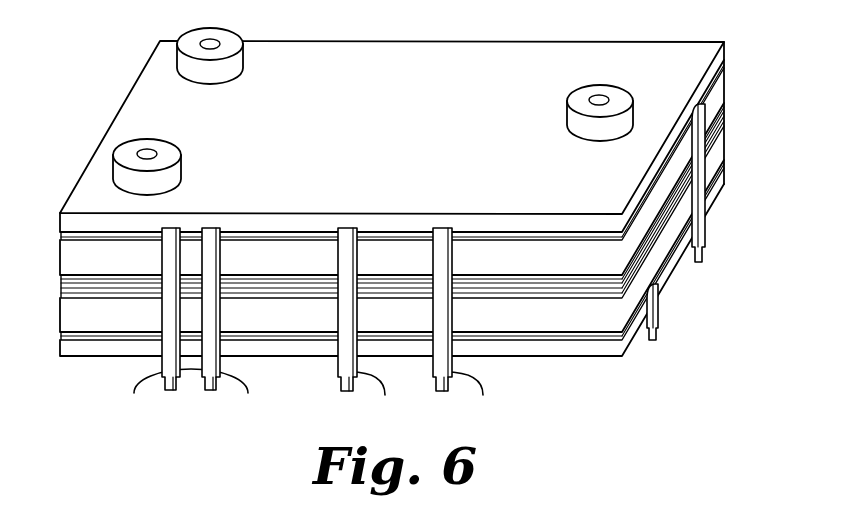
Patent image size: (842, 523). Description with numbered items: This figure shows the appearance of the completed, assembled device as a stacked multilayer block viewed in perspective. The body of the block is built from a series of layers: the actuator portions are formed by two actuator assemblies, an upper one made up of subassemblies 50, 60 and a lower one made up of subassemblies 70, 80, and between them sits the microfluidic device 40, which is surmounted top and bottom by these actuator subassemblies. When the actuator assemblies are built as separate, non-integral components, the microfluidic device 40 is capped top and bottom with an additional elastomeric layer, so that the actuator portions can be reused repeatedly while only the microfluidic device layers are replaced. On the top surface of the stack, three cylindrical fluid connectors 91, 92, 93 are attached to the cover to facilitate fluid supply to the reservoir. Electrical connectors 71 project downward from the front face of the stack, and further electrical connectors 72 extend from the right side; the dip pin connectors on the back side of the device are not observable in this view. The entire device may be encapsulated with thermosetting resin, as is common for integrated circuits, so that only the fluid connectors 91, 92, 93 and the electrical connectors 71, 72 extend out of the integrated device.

The microfluidic device 40 is at (435, 197).
The subassembly 50 is at (741, 72).
The subassembly 60 is at (741, 43).
The subassembly 70 is at (741, 118).
The subassembly 80 is at (741, 161).
The electrical connector 71 is at (309, 326).
The electrical connector 72 is at (706, 236).
The fluid connector 91 is at (174, 60).
The fluid connector 92 is at (112, 167).
The fluid connector 93 is at (565, 120).